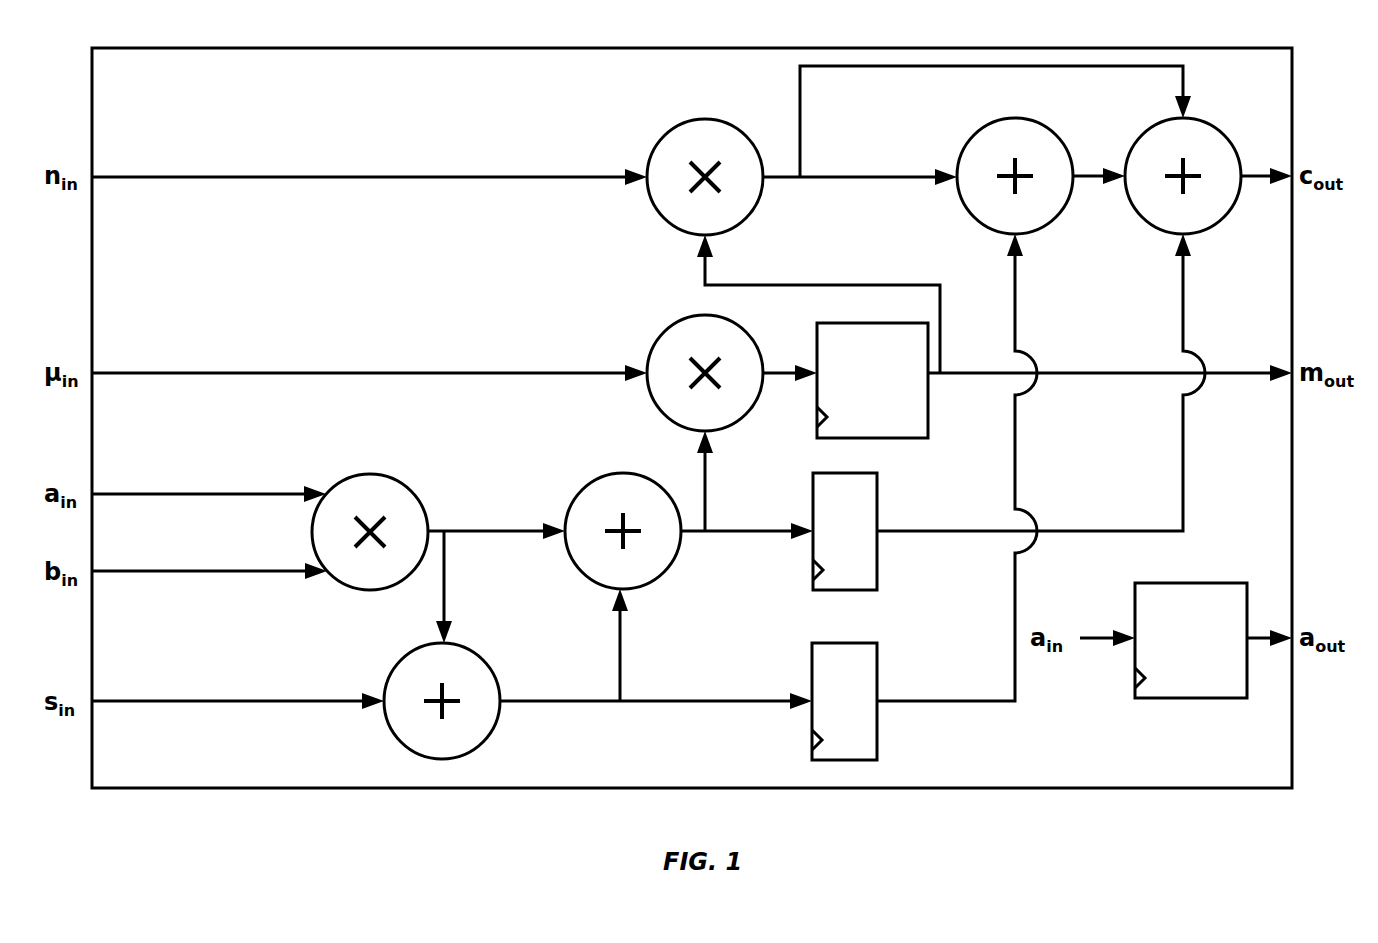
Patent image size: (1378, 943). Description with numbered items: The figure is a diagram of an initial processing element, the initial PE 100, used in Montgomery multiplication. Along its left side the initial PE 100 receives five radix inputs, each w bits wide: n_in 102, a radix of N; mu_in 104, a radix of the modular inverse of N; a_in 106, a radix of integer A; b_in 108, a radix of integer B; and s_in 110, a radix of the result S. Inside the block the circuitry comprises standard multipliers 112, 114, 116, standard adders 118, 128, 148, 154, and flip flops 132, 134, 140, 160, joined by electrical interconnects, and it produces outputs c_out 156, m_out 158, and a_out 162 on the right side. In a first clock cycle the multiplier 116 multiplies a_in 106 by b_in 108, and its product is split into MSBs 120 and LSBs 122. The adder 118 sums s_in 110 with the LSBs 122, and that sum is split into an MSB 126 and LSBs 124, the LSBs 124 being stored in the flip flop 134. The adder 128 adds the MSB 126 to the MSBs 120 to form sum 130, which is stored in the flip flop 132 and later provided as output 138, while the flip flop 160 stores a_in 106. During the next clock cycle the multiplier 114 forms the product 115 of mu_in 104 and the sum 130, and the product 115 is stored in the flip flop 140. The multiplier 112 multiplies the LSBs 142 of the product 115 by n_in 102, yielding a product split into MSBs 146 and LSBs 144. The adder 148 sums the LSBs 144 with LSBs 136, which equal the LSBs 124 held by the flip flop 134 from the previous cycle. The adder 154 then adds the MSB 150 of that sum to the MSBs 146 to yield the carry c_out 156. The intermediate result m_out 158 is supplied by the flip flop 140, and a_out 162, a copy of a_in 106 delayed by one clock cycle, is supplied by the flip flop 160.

The initial PE 100 is at (530, 48).
The n_in input 102 is at (295, 177).
The mu_in input 104 is at (302, 373).
The a_in input 106 is at (150, 494).
The b_in input 108 is at (165, 571).
The s_in input 110 is at (165, 701).
The multiplier 112 is at (673, 125).
The multiplier 114 is at (680, 322).
The product 115 is at (785, 365).
The multiplier 116 is at (376, 474).
The adder 118 is at (486, 743).
The MSBs 120 is at (455, 534).
The LSBs 122 is at (447, 565).
The LSBs 124 is at (660, 703).
The MSB 126 is at (622, 668).
The adder 128 is at (612, 478).
The sum 130 is at (707, 490).
The flip flop 132 is at (842, 590).
The flip flop 134 is at (858, 643).
The LSBs 136 is at (1018, 300).
The output 138 is at (1050, 531).
The flip flop 140 is at (893, 438).
The LSBs 142 is at (862, 285).
The LSBs 144 is at (835, 177).
The MSBs 146 is at (855, 66).
The adder 148 is at (983, 120).
The MSB 150 is at (1075, 180).
The adder 154 is at (1192, 117).
The c_out output 156 is at (1255, 180).
The m_out output 158 is at (1255, 378).
The flip flop 160 is at (1170, 583).
The a_out output 162 is at (1255, 642).